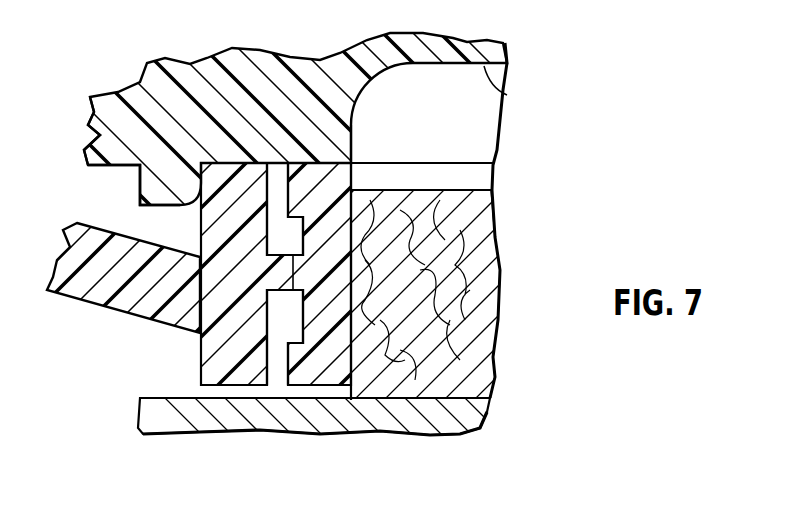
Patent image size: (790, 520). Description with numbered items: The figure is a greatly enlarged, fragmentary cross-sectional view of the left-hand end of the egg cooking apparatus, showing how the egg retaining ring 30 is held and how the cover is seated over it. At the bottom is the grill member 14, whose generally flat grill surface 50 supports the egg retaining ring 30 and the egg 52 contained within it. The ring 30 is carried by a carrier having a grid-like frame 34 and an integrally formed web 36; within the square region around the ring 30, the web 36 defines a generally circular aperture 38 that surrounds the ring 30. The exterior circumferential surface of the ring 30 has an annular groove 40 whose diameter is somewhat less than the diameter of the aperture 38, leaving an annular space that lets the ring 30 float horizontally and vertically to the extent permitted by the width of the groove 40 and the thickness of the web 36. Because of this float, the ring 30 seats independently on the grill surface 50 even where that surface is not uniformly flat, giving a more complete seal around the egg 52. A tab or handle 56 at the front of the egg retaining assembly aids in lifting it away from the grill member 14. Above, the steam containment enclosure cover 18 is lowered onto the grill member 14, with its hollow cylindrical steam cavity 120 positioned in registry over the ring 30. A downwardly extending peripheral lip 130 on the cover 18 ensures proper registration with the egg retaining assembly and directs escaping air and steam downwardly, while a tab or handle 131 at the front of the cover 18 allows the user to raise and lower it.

The grill member 14 is at (497, 415).
The steam containment enclosure cover 18 is at (508, 48).
The egg retaining ring 30 is at (350, 178).
The grid-like frame 34 is at (213, 220).
The web 36 is at (283, 268).
The circular aperture 38 is at (297, 290).
The annular groove 40 is at (303, 341).
The grill surface 50 is at (170, 398).
The egg 52 is at (486, 211).
The tab or handle 56 is at (143, 315).
The steam cavity 120 is at (507, 95).
The peripheral lip 130 is at (150, 205).
The tab or handle 131 is at (98, 132).